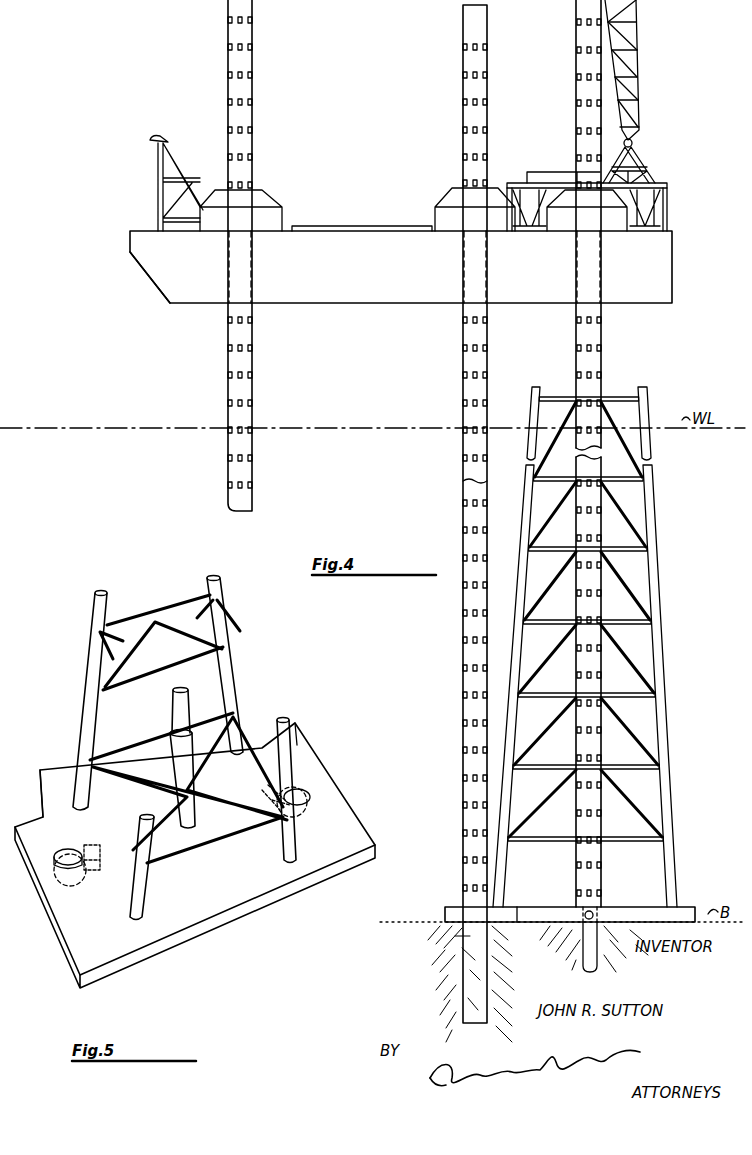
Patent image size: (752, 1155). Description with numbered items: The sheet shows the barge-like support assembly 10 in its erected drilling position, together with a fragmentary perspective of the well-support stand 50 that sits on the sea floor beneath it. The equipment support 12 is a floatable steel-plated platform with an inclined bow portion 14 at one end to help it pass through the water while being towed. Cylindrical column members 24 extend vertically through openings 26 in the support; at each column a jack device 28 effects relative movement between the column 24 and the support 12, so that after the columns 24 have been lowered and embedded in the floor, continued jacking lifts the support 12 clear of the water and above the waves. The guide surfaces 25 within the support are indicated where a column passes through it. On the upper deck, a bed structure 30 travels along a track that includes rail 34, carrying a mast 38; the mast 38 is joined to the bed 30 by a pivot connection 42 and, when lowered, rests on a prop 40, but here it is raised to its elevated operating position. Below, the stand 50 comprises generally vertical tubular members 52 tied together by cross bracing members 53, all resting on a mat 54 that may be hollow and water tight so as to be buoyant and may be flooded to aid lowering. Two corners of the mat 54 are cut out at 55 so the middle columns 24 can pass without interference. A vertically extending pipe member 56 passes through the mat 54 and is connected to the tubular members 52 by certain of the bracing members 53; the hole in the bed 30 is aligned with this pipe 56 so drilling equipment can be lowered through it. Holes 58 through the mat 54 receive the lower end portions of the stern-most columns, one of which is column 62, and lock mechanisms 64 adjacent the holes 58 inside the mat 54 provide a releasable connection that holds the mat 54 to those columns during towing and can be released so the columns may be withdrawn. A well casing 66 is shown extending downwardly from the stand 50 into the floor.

In FIG. 4, the support assembly 10 is at (353, 84).
In FIG. 4, the equipment support 12 is at (382, 273).
In FIG. 4, the inclined bow portion 14 is at (140, 277).
In FIG. 4, the column members 24 is at (252, 374).
In FIG. 4, the leg well 25 is at (259, 258).
In FIG. 4, the vertical openings 26 is at (460, 262).
In FIG. 4, the jack devices 28 is at (266, 186).
In FIG. 4, the bed structure 30 is at (516, 181).
In FIG. 4, the rail 34 is at (317, 214).
In FIG. 4, the mast 38 is at (638, 15).
In FIG. 4, the prop 40 is at (158, 164).
In FIG. 4, the pivot connection 42 is at (637, 144).
In FIG. 4, the well-support stand 50 is at (594, 647).
In FIG. 5, the well-support stand 50 is at (196, 744).
In FIG. 4, the tubular members 52 is at (522, 556).
In FIG. 5, the tubular members 52 is at (92, 602).
In FIG. 4, the cross bracing members 53 is at (642, 704).
In FIG. 5, the cross bracing members 53 is at (172, 606).
In FIG. 4, the mat 54 is at (685, 903).
In FIG. 5, the mat 54 is at (314, 754).
In FIG. 5, the cut-out corners 55 is at (40, 818).
In FIG. 5, the pipe member 56 is at (172, 758).
In FIG. 4, the holes 58 is at (600, 912).
In FIG. 5, the holes 58 is at (56, 846).
In FIG. 4, the stern-most column 62 is at (603, 329).
In FIG. 5, the lock mechanisms 64 is at (90, 841).
In FIG. 4, the well casing 66 is at (585, 936).